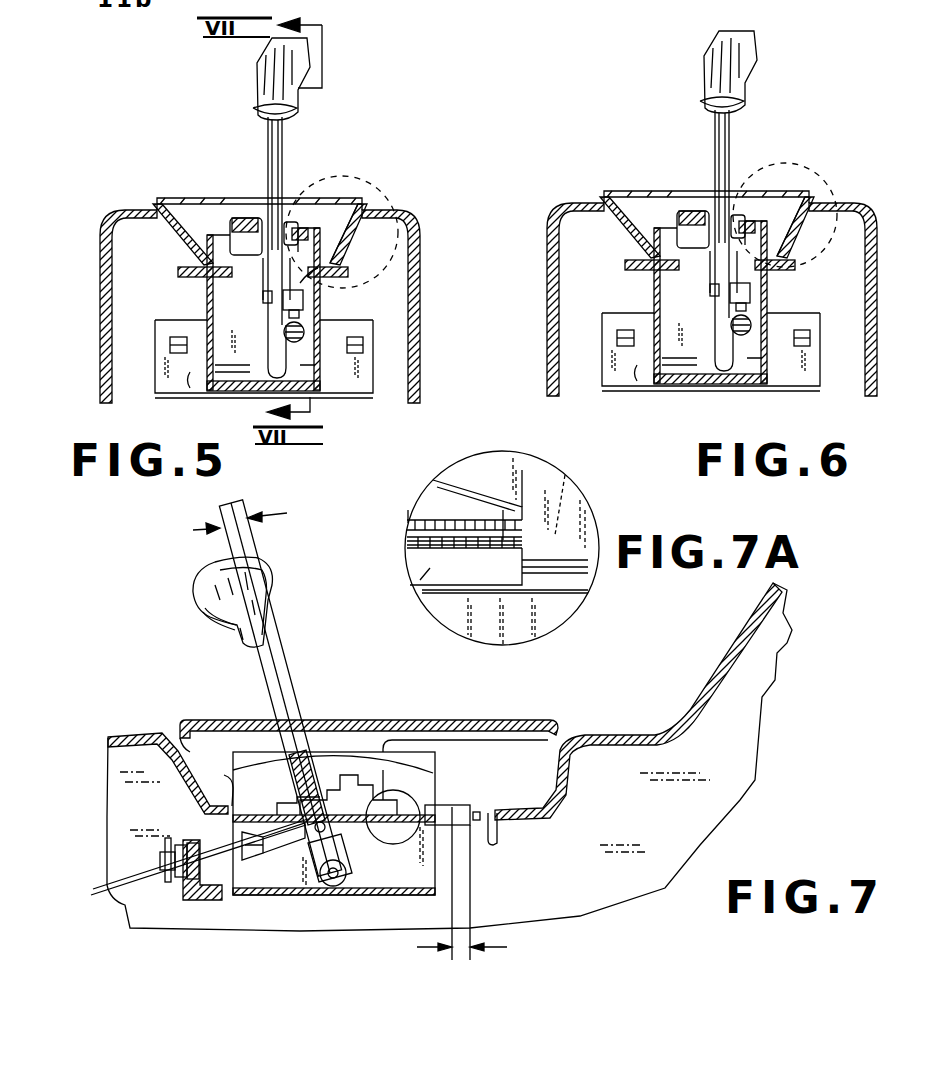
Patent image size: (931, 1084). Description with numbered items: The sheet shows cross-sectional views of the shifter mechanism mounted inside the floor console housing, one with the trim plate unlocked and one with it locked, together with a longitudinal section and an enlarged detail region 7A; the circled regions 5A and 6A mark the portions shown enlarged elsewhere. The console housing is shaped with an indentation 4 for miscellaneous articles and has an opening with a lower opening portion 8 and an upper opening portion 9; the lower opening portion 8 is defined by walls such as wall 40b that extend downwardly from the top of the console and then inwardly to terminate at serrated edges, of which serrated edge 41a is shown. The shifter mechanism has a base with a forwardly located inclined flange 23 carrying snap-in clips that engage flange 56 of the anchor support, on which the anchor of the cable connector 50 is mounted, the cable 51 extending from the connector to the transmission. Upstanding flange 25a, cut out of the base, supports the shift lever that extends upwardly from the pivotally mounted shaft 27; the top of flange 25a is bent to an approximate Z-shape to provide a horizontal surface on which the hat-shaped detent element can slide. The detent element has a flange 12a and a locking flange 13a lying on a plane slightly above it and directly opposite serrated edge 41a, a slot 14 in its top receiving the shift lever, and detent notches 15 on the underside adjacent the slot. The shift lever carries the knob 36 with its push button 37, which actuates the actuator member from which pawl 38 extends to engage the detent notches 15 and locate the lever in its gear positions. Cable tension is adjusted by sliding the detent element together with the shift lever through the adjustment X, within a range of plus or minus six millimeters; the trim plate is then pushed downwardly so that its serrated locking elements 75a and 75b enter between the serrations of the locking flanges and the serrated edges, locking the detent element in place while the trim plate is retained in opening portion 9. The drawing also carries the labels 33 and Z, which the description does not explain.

In FIG. 5, the indentation 4 is at (245, 248).
In FIG. 5, the enlarged detail portion 5A is at (345, 178).
In FIG. 6, the enlarged detail portion 6A is at (786, 183).
In FIG. 7, the enlarged detail portion 7A is at (417, 797).
In FIG. 7, the opening portion 8 is at (227, 798).
In FIG. 7, the opening portion 9 is at (180, 730).
In FIG. 5, the flange 12a is at (205, 283).
In FIG. 7A, the flange 12a is at (590, 498).
In FIG. 5, the locking flange 13a is at (205, 277).
In FIG. 7A, the locking flange 13a is at (412, 507).
In FIG. 7, the slot 14 is at (430, 720).
In FIG. 5, the detent notches 15 is at (200, 262).
In FIG. 6, the detent notches 15 is at (667, 254).
In FIG. 7A, the detent notches 15 is at (473, 488).
In FIG. 7, the detent notches 15 is at (334, 796).
In FIG. 5, the flange 23 is at (363, 363).
In FIG. 6, the flange 23 is at (728, 369).
In FIG. 7, the flange 23 is at (172, 840).
In FIG. 7A, the upstanding flange 25a is at (518, 628).
In FIG. 7, the upstanding flange 25a is at (430, 865).
In FIG. 5, the shaft 27 is at (230, 377).
In FIG. 6, the shaft 27 is at (710, 396).
In FIG. 5, the ball joint 33 is at (290, 298).
In FIG. 6, the ball joint 33 is at (782, 309).
In FIG. 7, the knob 36 is at (207, 580).
In FIG. 7, the push button 37 is at (210, 622).
In FIG. 5, the pawl 38 is at (231, 328).
In FIG. 6, the pawl 38 is at (710, 323).
In FIG. 7, the pawl 38 is at (300, 783).
In FIG. 5, the flange or wall 40b is at (318, 268).
In FIG. 7A, the serrated edge 41a is at (410, 572).
In FIG. 7, the cable connector 50 is at (167, 853).
In FIG. 7, the cable 51 is at (130, 887).
In FIG. 7, the flange 56 is at (187, 890).
In FIG. 5, the serrated locking element 75a is at (200, 215).
In FIG. 6, the serrated locking element 75a is at (707, 205).
In FIG. 7A, the serrated locking element 75a is at (503, 510).
In FIG. 7, the serrated locking element 75a is at (343, 752).
In FIG. 5, the serrated locking element 75b is at (362, 212).
In FIG. 6, the serrated locking element 75b is at (832, 211).
In FIG. 7, the adjustment X is at (474, 949).
In FIG. 7, the angle Z is at (227, 532).